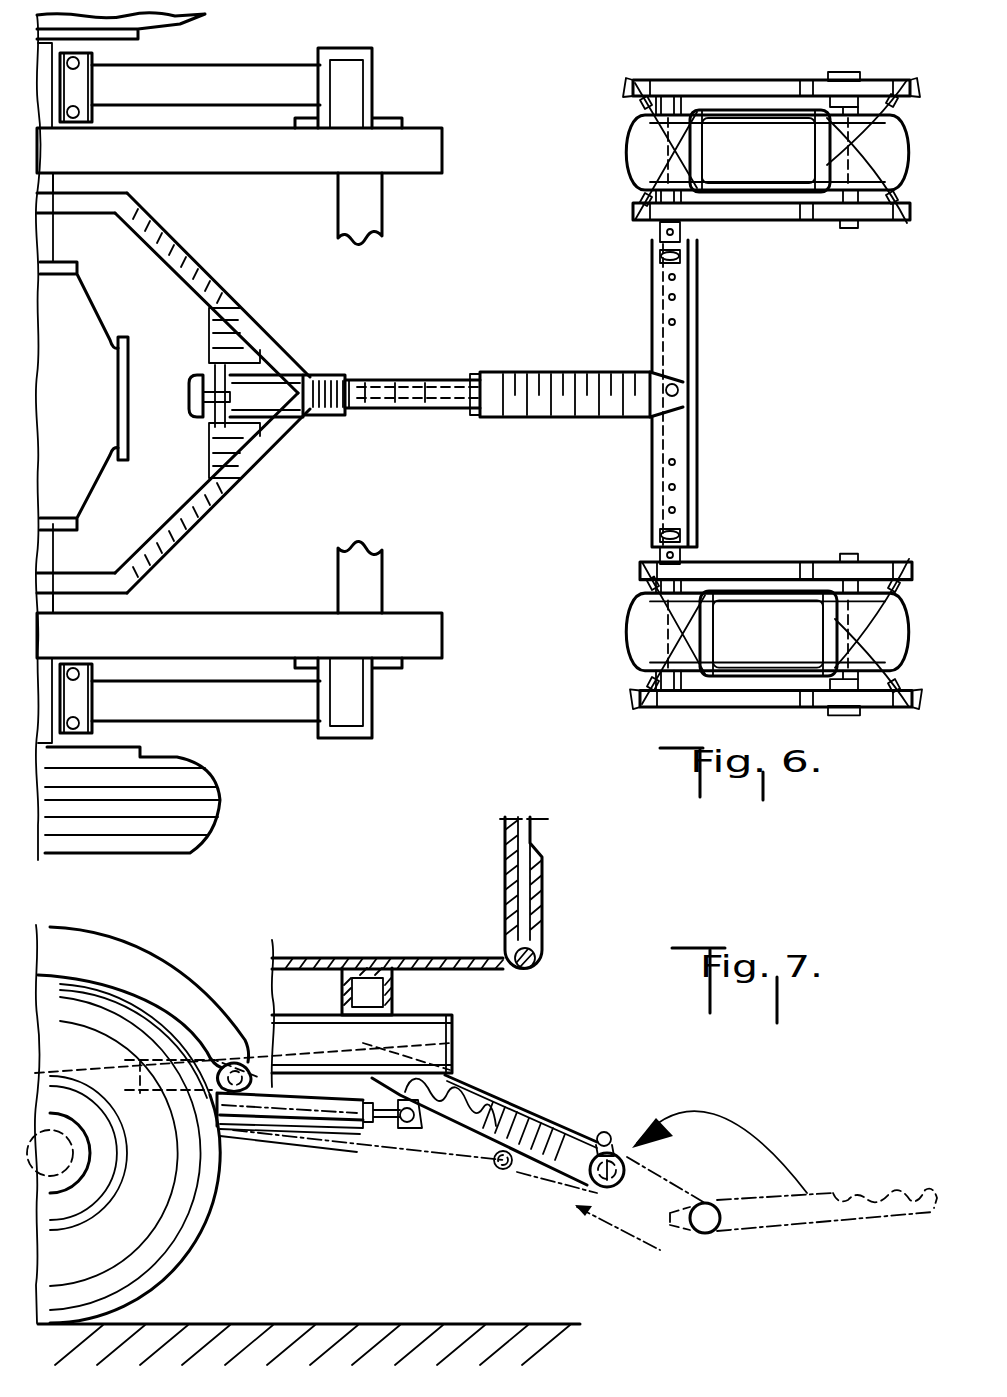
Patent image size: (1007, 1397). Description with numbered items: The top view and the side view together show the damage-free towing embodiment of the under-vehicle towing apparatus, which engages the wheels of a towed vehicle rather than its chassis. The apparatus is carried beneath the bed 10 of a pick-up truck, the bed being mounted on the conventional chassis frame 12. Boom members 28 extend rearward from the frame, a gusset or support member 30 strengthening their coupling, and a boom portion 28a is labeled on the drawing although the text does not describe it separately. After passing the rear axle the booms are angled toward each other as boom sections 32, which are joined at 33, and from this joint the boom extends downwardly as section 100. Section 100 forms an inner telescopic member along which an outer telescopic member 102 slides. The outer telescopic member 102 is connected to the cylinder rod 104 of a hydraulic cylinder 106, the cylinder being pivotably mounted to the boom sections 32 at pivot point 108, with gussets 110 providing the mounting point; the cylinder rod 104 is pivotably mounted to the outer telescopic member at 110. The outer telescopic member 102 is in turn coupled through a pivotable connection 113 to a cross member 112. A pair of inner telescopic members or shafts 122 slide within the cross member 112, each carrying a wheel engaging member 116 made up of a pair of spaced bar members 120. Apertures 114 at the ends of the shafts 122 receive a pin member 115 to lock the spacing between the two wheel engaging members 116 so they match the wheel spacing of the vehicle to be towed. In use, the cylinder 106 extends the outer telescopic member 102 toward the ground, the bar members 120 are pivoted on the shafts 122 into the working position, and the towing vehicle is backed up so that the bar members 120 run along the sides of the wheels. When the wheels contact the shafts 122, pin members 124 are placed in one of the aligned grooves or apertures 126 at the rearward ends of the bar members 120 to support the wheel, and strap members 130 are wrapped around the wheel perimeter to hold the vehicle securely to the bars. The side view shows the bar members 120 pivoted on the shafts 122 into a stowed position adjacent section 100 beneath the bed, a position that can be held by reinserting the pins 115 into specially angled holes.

In FIG. 7, the bed 10 is at (193, 980).
In FIG. 6, the frame 12 is at (247, 163).
In FIG. 7, the frame 12 is at (452, 1050).
In FIG. 6, the boom member 28 is at (110, 215).
In FIG. 6, the frame cross member 28a is at (127, 201).
In FIG. 6, the gusset or support member 30 is at (54, 238).
In FIG. 6, the boom sections 32 is at (222, 296).
In FIG. 6, the joint of boom sections 33 is at (305, 398).
In FIG. 7, the joint of boom sections 33 is at (363, 1043).
In FIG. 6, the downwardly extending section 100 is at (410, 380).
In FIG. 7, the downwardly extending section 100 is at (388, 1053).
In FIG. 6, the outer telescopic member 102 is at (553, 407).
In FIG. 7, the outer telescopic member 102 is at (700, 1198).
In FIG. 6, the cylinder rod 104 is at (425, 400).
In FIG. 7, the cylinder rod 104 is at (437, 1155).
In FIG. 7, the hydraulic cylinder 106 is at (320, 1125).
In FIG. 6, the pivot point 108 is at (212, 420).
In FIG. 7, the pivot point 108 is at (237, 1055).
In FIG. 6, the gussets 110 is at (240, 348).
In FIG. 7, the gussets 110 is at (405, 1130).
In FIG. 6, the cross member 112 is at (693, 343).
In FIG. 6, the pivotable connection 113 is at (680, 390).
In FIG. 6, the apertures 114 is at (667, 298).
In FIG. 6, the pin member 115 is at (668, 262).
In FIG. 7, the pin member 115 is at (607, 1132).
In FIG. 6, the wheel engaging members 116 is at (772, 396).
In FIG. 6, the bar members 120 is at (747, 87).
In FIG. 7, the bar members 120 is at (557, 1132).
In FIG. 6, the inner telescopic member 122 is at (657, 235).
In FIG. 7, the inner telescopic member 122 is at (706, 1235).
In FIG. 6, the pin members 124 is at (847, 72).
In FIG. 6, the grooves or apertures 126 is at (880, 222).
In FIG. 7, the grooves or apertures 126 is at (910, 1187).
In FIG. 6, the strap members 130 is at (863, 163).